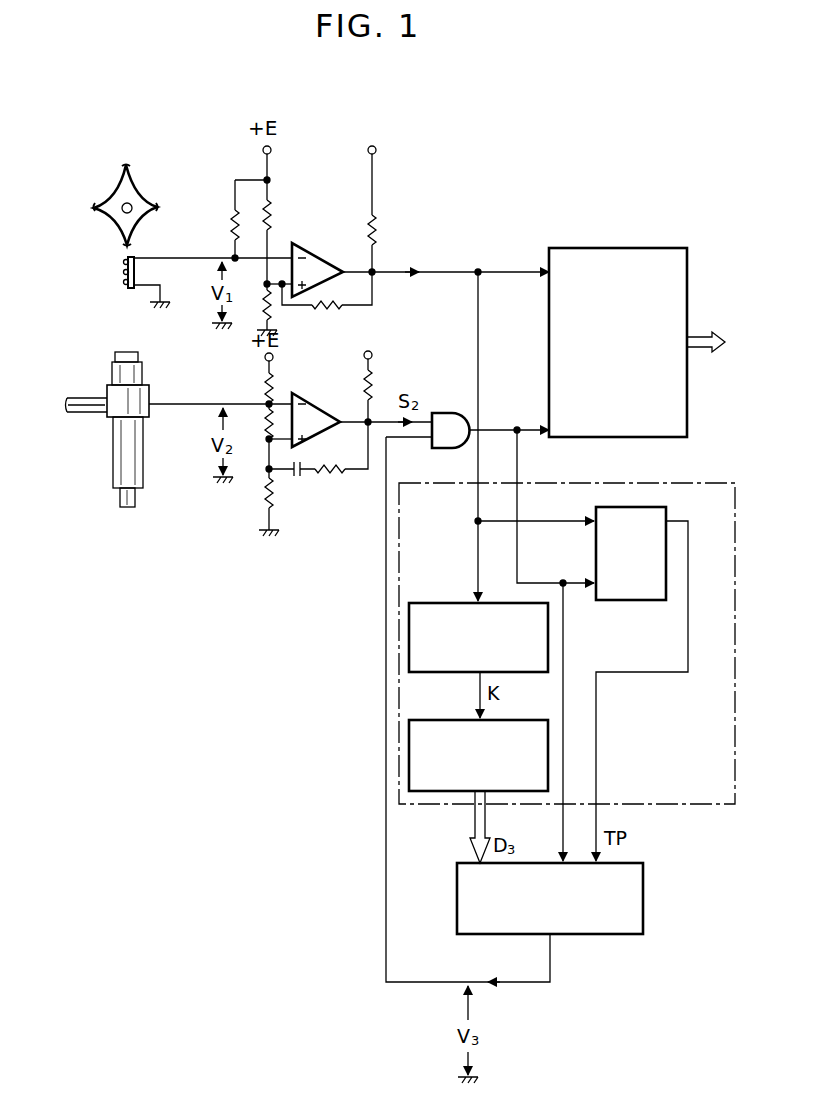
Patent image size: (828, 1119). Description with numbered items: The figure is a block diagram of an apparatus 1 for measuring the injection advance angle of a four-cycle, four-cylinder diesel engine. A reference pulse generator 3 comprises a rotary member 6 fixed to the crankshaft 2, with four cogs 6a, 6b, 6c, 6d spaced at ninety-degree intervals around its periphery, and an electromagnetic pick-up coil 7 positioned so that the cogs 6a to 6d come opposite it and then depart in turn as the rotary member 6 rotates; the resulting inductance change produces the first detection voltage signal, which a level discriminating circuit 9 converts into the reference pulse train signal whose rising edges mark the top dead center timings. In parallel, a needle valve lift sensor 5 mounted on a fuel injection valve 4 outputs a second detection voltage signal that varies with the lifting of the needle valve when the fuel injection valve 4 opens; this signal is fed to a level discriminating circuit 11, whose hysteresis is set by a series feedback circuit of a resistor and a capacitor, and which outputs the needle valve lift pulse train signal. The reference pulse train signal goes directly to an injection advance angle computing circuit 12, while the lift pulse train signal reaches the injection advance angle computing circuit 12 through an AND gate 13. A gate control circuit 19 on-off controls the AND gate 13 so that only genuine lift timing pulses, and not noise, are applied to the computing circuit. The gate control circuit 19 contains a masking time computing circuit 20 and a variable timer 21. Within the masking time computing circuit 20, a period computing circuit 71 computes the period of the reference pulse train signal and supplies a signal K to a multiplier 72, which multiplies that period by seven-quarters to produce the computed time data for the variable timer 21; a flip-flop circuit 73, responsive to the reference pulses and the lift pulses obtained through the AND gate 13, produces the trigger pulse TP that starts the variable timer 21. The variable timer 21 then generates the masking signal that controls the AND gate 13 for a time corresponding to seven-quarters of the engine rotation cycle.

The apparatus for measuring injection advance angle 1 is at (469, 209).
The crankshaft 2 is at (134, 198).
The reference pulse generator 3 is at (248, 182).
The fuel injection valve 4 is at (113, 464).
The needle valve lift sensor 5 is at (141, 384).
The rotary member 6 is at (112, 194).
The cog 6a is at (122, 244).
The cog 6b is at (92, 210).
The cog 6c is at (126, 164).
The cog 6d is at (159, 205).
The electromagnetic pick-up coil 7 is at (126, 278).
The level discriminating circuit 9 is at (313, 254).
The level discriminating circuit 11 is at (314, 402).
The injection advance angle computing circuit 12 is at (686, 257).
The AND gate 13 is at (454, 413).
The gate control circuit 19 is at (553, 709).
The masking time computing circuit 20 is at (676, 484).
The variable timer 21 is at (643, 912).
The period computing circuit 71 is at (449, 602).
The multiplier 72 is at (450, 720).
The flip-flop circuit 73 is at (640, 605).